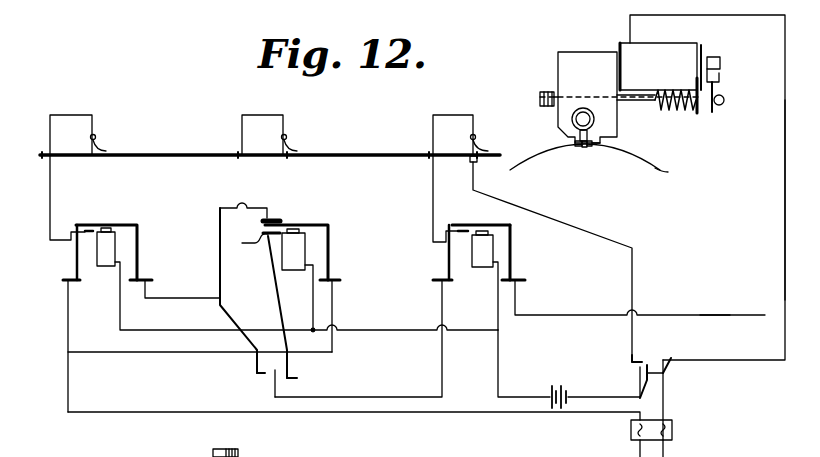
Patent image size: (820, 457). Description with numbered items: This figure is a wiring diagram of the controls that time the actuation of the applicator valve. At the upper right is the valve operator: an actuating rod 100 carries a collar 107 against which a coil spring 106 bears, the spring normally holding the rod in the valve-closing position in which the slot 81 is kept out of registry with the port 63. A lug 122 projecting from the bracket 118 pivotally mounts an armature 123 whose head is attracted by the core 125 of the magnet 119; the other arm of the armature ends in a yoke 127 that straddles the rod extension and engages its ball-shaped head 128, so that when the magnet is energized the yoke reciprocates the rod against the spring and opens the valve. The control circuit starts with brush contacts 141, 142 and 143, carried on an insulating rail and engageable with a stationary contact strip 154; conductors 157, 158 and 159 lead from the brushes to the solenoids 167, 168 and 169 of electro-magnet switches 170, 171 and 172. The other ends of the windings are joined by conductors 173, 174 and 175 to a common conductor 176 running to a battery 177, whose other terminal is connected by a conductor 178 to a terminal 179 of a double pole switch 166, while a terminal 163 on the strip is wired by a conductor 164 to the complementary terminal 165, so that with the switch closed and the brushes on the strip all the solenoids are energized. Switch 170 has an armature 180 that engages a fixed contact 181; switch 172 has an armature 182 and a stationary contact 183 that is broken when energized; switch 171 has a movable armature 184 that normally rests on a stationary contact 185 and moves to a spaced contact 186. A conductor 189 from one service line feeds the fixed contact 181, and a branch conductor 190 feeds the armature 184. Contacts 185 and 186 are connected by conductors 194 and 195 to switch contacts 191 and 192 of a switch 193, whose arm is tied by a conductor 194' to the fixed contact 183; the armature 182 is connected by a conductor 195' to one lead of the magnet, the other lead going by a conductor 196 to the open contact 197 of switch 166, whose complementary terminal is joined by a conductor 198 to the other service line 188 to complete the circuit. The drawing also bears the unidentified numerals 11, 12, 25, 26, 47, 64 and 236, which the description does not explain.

The cam surface 11 is at (625, 152).
The cam surface edge 12 is at (660, 170).
The roller 25 is at (563, 137).
The housing 26 is at (583, 40).
The roller support 47 is at (577, 147).
The port 63 is at (585, 148).
The roller bracket 64 is at (600, 148).
The slot 81 is at (590, 148).
The actuating rod 100 is at (622, 101).
The coil spring 106 is at (688, 74).
The collar 107 is at (655, 88).
The bracket 118 is at (698, 110).
The magnet 119 is at (677, 45).
The lug 122 is at (720, 78).
The armature 123 is at (720, 62).
The core 125 is at (703, 55).
The yoke 127 is at (715, 112).
The ball-shaped head 128 is at (724, 100).
The brush contact 141 is at (95, 137).
The brush contact 142 is at (287, 137).
The brush contact 143 is at (477, 133).
The stationary contact strip 154 is at (348, 156).
The conductor 157 is at (78, 115).
The conductor 158 is at (259, 115).
The conductor 159 is at (467, 115).
The terminal 163 is at (473, 163).
The conductor 164 is at (497, 200).
The terminal 165 is at (632, 363).
The double pole switch 166 is at (672, 375).
The solenoid 167 is at (108, 267).
The solenoid 168 is at (283, 270).
The solenoid 169 is at (486, 268).
The electro-magnet switch 170 is at (132, 225).
The electro-magnet switch 171 is at (325, 224).
The electro-magnet switch 172 is at (512, 245).
The conductor 173 is at (124, 318).
The conductor 174 is at (315, 309).
The conductor 175 is at (500, 315).
The common conductor 176 is at (500, 380).
The battery 177 is at (575, 378).
The conductor 178 is at (578, 397).
The terminal 179 is at (640, 378).
The armature 180 is at (108, 214).
The fixed contact 181 is at (77, 258).
The armature 182 is at (472, 225).
The stationary contact 183 is at (452, 225).
The movable armature 184 is at (282, 221).
The stationary contact 185 is at (272, 212).
The spaced contact 186 is at (266, 248).
The service line 188 is at (676, 454).
The conductor 189 is at (478, 414).
The branch conductor 190 is at (199, 355).
The switch contact 191 is at (260, 373).
The switch contact 192 is at (297, 378).
The switch 193 is at (272, 386).
The conductor 194 is at (220, 290).
The conductor 194' is at (363, 338).
The conductor 195 is at (263, 307).
The conductor 195' is at (710, 303).
The conductor 196 is at (785, 213).
The open contact 197 is at (660, 362).
The conductor 198 is at (667, 385).
The terminal block 236 is at (250, 450).